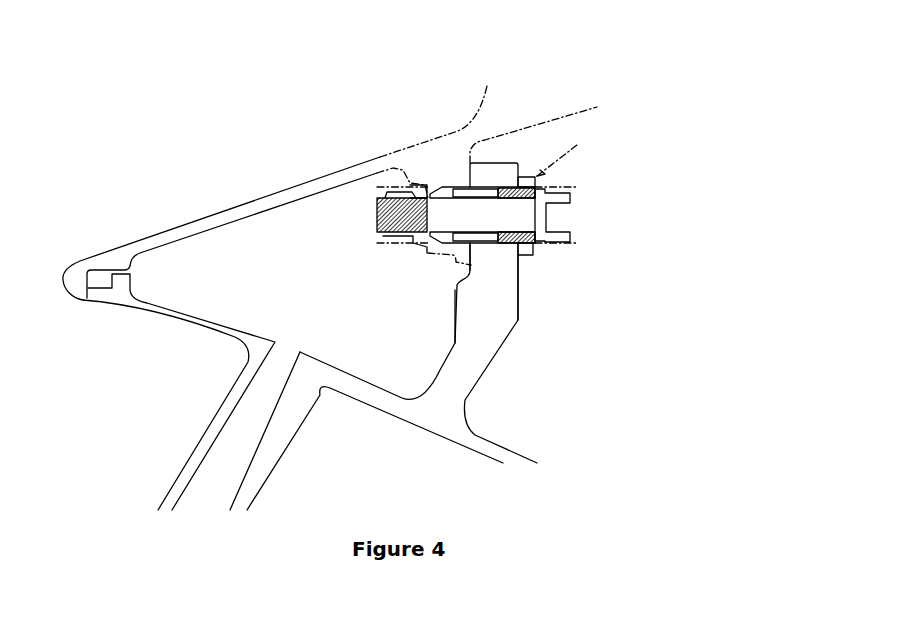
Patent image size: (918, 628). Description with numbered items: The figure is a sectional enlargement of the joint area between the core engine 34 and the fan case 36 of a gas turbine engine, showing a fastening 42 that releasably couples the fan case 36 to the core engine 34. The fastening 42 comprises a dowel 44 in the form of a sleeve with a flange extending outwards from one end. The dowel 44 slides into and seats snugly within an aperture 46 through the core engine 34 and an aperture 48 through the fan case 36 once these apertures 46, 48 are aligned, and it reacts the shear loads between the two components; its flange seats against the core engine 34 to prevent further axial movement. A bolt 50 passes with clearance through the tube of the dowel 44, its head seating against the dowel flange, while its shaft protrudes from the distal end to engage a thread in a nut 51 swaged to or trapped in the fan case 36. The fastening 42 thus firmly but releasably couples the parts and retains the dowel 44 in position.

The core engine 34 is at (602, 142).
The fan case 36 is at (273, 177).
The fastening 42 is at (571, 259).
The dowel 44 is at (523, 183).
The aperture 46 is at (527, 273).
The aperture 48 is at (443, 273).
The bolt 50 is at (522, 212).
The nut 51 is at (413, 236).